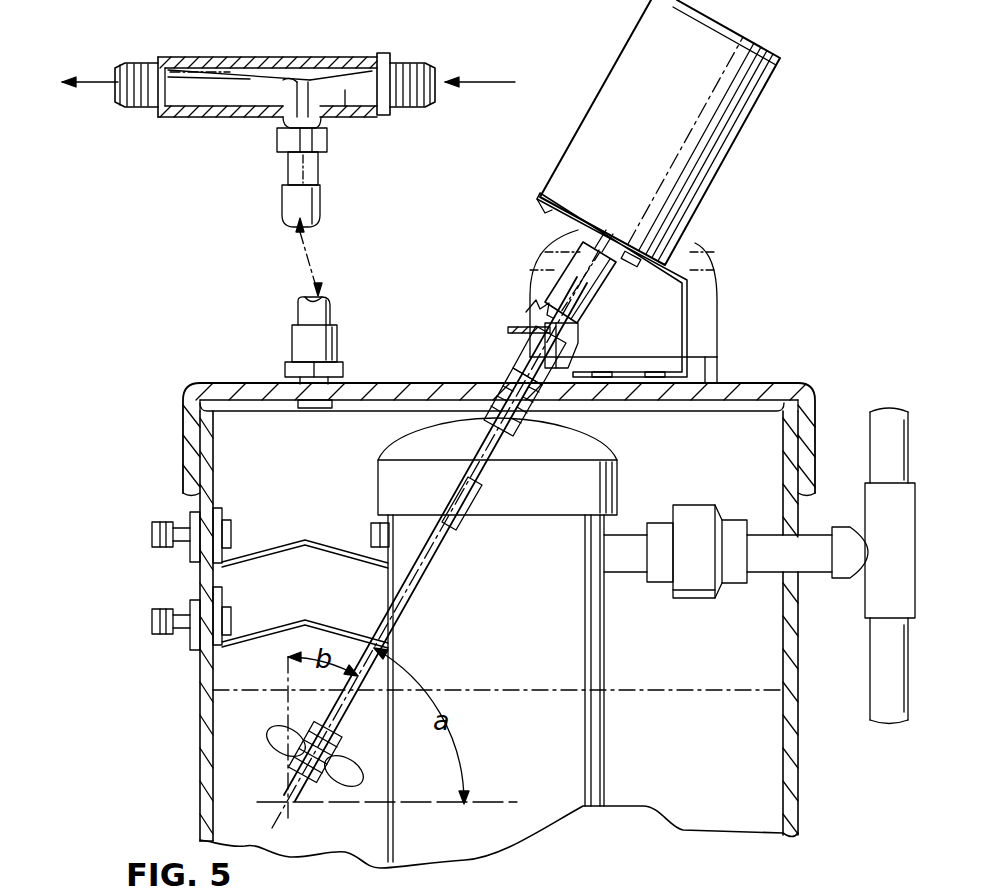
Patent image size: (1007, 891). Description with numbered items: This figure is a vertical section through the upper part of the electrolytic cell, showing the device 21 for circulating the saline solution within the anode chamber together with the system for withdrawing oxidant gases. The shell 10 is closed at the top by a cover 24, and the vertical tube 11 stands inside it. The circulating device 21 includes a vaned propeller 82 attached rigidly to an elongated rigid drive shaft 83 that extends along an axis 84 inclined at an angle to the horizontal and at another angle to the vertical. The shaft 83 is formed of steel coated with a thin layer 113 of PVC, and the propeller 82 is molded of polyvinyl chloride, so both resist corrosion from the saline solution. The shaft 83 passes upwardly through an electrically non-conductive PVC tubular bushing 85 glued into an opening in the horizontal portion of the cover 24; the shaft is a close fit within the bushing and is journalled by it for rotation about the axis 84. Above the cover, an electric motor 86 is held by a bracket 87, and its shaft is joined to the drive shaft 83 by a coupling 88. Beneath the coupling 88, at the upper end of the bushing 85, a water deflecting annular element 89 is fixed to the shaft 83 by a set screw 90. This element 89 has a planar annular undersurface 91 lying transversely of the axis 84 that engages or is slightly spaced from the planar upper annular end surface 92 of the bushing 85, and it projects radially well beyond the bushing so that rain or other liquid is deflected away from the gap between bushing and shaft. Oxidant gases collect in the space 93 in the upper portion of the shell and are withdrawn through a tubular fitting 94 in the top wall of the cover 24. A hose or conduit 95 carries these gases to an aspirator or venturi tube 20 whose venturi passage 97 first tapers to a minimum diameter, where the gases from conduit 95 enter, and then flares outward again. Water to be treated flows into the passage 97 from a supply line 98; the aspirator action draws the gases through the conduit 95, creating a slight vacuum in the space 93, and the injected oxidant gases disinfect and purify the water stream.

The tank 10 is at (802, 790).
The standpipe 11 is at (607, 648).
The venturi tube 20 is at (296, 50).
The device for circulating the saline solution 21 is at (478, 350).
The cover 24 is at (738, 384).
The propeller 82 is at (316, 786).
The drive shaft 83 is at (468, 489).
The axis 84 is at (400, 613).
The tubular bushing 85 is at (548, 409).
The electric motor 86 is at (704, 163).
The bracket 87 is at (689, 300).
The coupling 88 is at (598, 292).
The water deflecting annular element 89 is at (565, 344).
The set screw 90 is at (540, 320).
The planar annular undersurface 91 is at (516, 330).
The upper annular end surface 92 is at (533, 343).
The space 93 is at (315, 462).
The tubular fitting 94 is at (295, 347).
The conduit 95 is at (322, 204).
The venturi passage 97 is at (353, 91).
The supply line 98 is at (480, 65).
The thin layer of PVC 113 is at (448, 527).